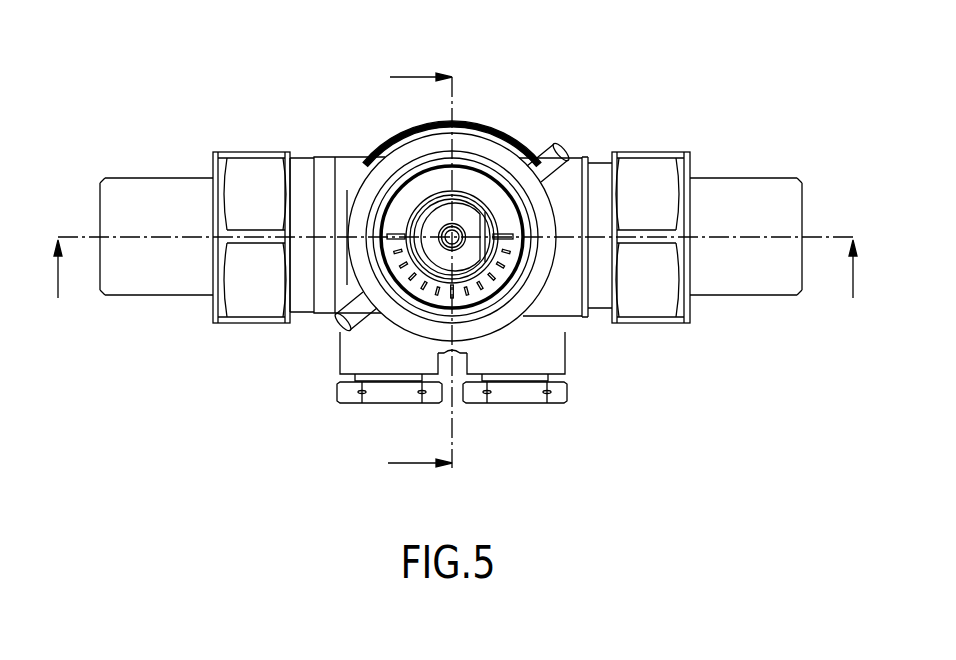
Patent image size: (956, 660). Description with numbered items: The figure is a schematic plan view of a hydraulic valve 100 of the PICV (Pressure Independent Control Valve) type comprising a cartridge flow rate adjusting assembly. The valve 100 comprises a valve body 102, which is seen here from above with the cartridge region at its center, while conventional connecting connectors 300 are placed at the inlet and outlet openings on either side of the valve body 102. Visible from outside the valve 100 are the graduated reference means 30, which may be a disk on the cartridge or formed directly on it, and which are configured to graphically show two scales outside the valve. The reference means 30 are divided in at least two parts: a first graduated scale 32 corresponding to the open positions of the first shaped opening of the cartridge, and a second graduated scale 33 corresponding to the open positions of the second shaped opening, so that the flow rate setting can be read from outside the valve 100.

The hydraulic valve 100 is at (755, 65).
The valve body 102 is at (510, 137).
The connecting connectors 300 is at (220, 153).
The graduated reference means 30 is at (502, 245).
The first graduated scale 32 is at (405, 285).
The second graduated scale 33 is at (488, 292).